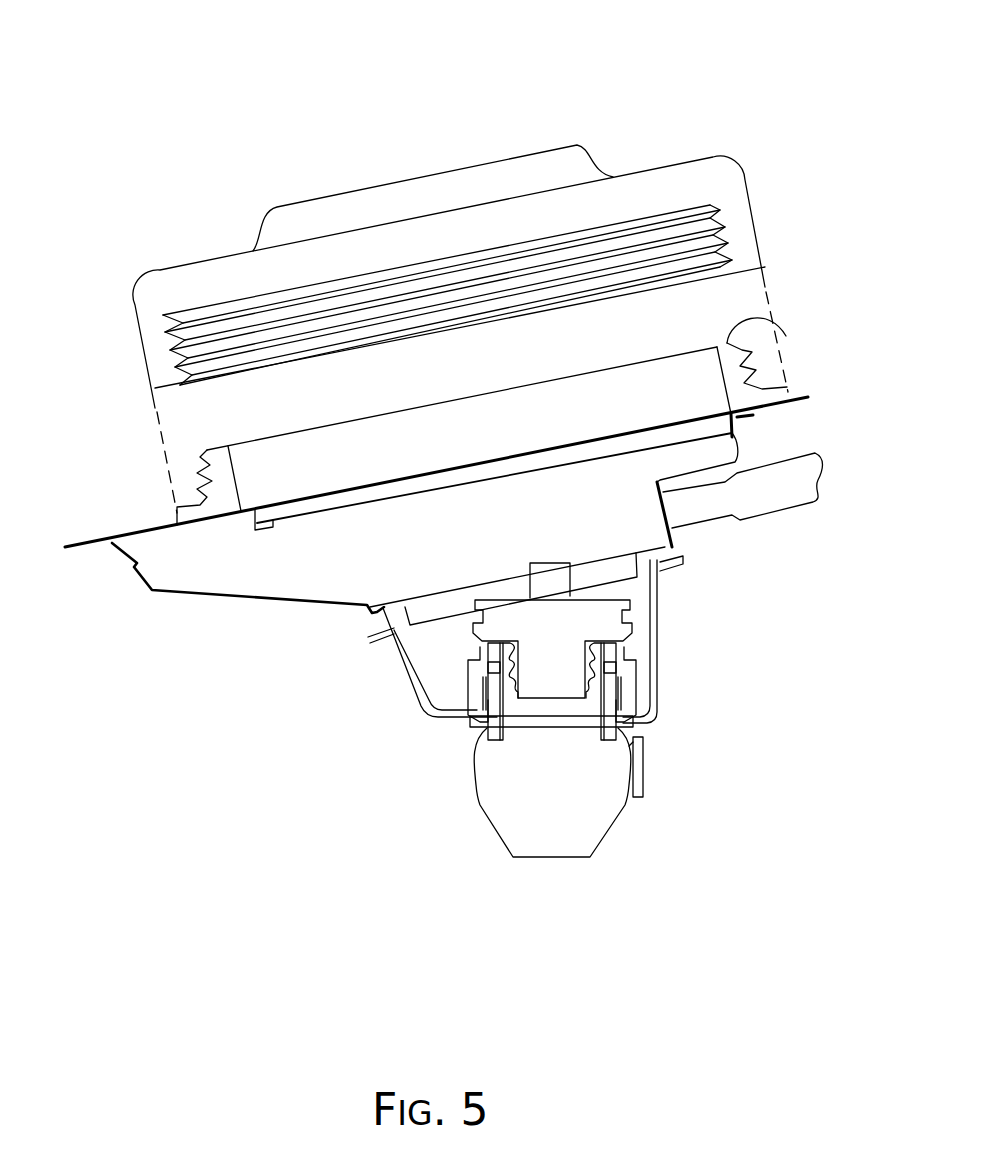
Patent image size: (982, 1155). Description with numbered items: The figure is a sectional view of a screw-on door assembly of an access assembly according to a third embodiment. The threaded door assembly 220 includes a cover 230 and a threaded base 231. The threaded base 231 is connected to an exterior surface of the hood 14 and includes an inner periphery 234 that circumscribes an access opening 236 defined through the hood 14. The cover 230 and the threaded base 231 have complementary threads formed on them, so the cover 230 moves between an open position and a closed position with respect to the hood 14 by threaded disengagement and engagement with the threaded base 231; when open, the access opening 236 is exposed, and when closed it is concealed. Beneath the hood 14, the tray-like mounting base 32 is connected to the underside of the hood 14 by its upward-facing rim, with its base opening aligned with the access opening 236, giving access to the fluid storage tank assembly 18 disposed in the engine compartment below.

The threaded door assembly 220 is at (210, 110).
The cover 230 is at (683, 163).
The threaded base 231 is at (730, 343).
The access opening 236 is at (454, 434).
The hood 14 is at (90, 542).
The mounting base 32 is at (170, 594).
The inner periphery 234 is at (273, 522).
The fluid storage tank assembly 18 is at (438, 803).